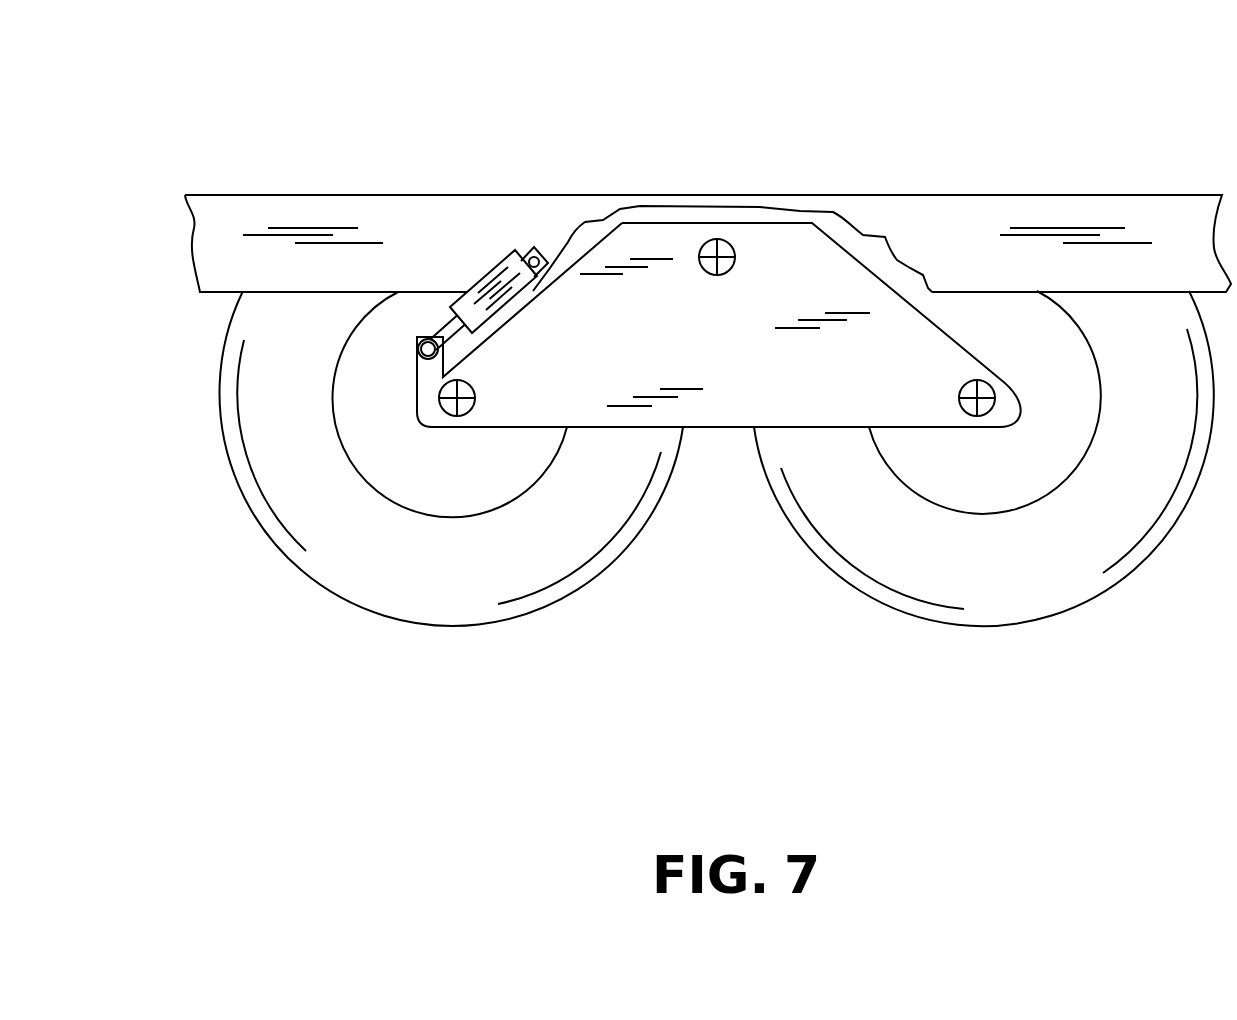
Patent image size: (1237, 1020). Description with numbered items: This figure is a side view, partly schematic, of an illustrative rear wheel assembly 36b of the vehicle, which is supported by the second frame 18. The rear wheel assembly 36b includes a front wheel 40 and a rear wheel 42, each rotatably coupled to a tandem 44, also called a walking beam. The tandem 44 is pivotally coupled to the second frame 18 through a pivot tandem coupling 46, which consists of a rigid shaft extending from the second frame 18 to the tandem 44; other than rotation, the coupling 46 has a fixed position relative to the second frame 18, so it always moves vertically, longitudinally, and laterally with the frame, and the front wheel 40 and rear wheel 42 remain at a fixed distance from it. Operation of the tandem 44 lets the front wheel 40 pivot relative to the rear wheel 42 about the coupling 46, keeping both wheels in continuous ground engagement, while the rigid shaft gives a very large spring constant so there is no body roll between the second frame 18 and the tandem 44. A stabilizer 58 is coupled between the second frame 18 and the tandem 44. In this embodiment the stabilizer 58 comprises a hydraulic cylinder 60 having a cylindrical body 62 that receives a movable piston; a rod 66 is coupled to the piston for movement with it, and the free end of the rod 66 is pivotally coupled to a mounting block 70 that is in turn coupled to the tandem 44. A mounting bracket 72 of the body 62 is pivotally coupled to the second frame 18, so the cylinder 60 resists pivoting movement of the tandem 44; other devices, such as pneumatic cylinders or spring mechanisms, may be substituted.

The second frame 18 is at (1185, 207).
The right rear wheel assembly 36b is at (722, 577).
The front wheel 40 is at (411, 610).
The rear wheel 42 is at (1043, 600).
The tandem 44 is at (920, 367).
The pivot tandem coupling 46 is at (720, 239).
The stabilizer 58 is at (527, 194).
The hydraulic cylinder 60 is at (478, 282).
The cylindrical body 62 is at (503, 295).
The rod 66 is at (440, 349).
The mounting block 70 is at (417, 368).
The mounting bracket 72 is at (535, 245).